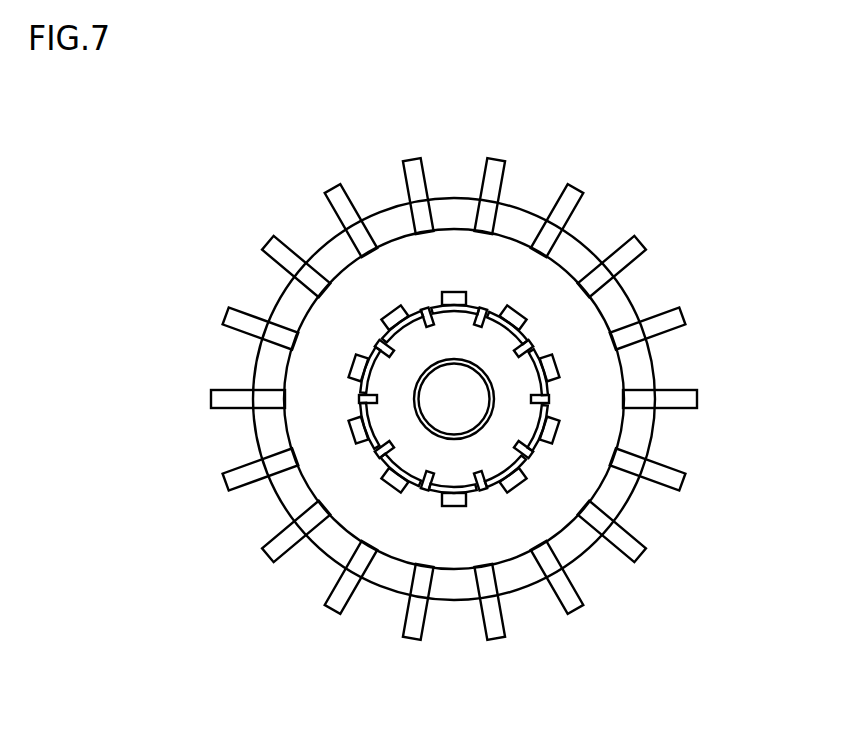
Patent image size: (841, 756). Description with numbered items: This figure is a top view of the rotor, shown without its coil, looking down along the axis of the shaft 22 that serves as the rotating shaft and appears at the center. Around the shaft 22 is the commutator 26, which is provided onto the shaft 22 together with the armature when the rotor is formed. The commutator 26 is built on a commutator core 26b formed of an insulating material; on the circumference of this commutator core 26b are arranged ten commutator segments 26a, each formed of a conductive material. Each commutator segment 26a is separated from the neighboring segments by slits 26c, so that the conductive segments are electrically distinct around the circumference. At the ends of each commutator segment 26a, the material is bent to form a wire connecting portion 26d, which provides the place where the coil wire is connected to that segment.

The shaft 22 is at (460, 408).
The commutator 26 is at (520, 407).
The commutator segment 26a is at (493, 492).
The commutator core 26b is at (507, 397).
The slit 26c is at (528, 328).
The wire connecting portion 26d is at (390, 483).